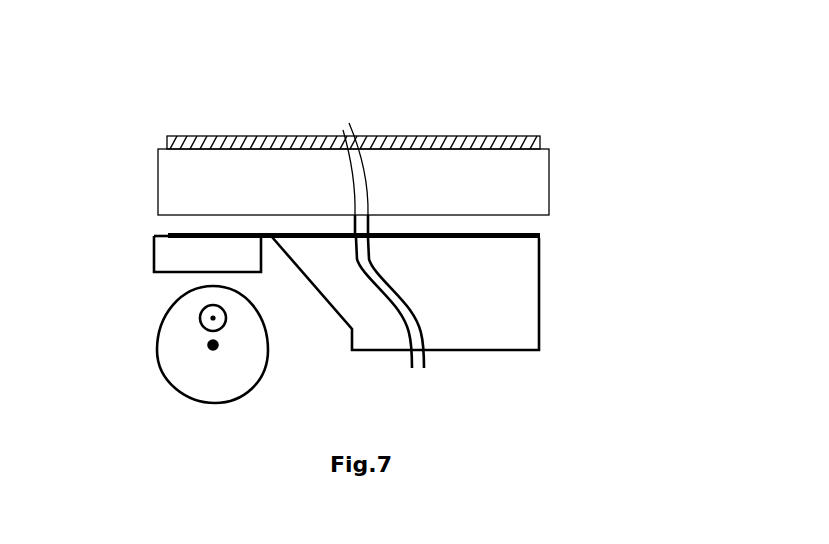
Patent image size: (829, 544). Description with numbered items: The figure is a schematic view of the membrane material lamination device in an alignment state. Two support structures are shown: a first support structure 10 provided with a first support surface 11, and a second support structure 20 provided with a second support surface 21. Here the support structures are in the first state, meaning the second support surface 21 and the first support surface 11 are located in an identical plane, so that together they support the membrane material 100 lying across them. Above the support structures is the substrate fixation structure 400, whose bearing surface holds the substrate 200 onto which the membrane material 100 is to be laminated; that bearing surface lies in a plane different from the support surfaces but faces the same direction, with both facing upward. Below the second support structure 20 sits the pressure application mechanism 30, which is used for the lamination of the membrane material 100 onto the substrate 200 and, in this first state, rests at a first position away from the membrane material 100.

The substrate fixation structure 400 is at (192, 192).
The substrate 200 is at (360, 143).
The membrane material 100 is at (532, 232).
The first support surface 11 is at (548, 236).
The second support surface 21 is at (153, 220).
The second support structure 20 is at (167, 258).
The first support structure 10 is at (518, 302).
The pressure application mechanism 30 is at (180, 353).